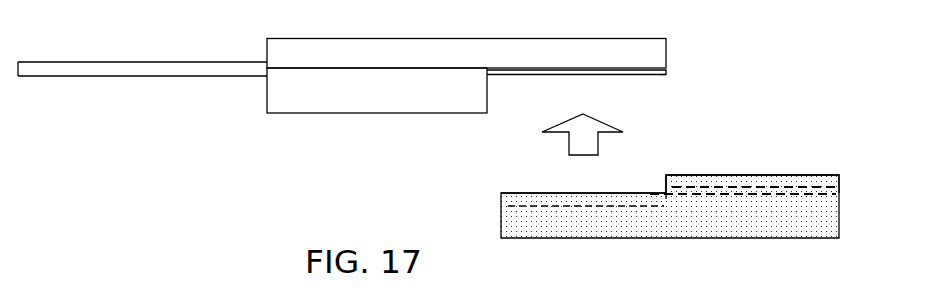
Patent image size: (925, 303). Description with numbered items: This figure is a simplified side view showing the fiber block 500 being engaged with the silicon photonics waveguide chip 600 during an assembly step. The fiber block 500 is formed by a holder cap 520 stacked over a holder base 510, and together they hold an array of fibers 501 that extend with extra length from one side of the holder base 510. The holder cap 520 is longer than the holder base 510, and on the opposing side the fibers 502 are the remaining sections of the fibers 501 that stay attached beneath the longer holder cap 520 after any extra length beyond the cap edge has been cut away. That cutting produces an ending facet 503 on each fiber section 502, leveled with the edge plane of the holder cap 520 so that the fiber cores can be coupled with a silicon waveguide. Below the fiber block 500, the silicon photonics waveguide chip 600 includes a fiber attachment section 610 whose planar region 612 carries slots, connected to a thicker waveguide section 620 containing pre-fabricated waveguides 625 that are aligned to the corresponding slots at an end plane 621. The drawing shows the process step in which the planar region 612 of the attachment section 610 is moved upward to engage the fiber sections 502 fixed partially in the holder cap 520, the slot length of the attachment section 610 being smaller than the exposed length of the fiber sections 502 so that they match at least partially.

The fiber block 500 is at (318, 141).
The fibers 501 is at (128, 62).
The fiber sections 502 is at (622, 77).
The ending facet 503 is at (666, 72).
The holder base 510 is at (270, 100).
The holder cap 520 is at (355, 39).
The silicon photonics waveguide chip 600 is at (707, 153).
The fiber attachment section 610 is at (504, 223).
The planar region 612 is at (511, 193).
The waveguide section 620 is at (770, 175).
The end plane 621 is at (666, 191).
The waveguides 625 is at (782, 196).